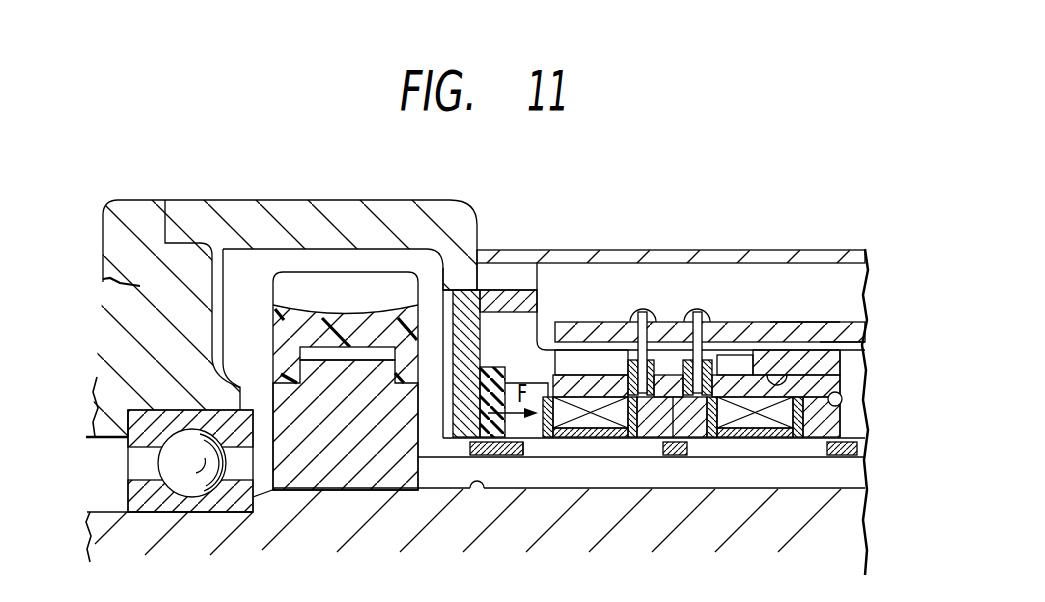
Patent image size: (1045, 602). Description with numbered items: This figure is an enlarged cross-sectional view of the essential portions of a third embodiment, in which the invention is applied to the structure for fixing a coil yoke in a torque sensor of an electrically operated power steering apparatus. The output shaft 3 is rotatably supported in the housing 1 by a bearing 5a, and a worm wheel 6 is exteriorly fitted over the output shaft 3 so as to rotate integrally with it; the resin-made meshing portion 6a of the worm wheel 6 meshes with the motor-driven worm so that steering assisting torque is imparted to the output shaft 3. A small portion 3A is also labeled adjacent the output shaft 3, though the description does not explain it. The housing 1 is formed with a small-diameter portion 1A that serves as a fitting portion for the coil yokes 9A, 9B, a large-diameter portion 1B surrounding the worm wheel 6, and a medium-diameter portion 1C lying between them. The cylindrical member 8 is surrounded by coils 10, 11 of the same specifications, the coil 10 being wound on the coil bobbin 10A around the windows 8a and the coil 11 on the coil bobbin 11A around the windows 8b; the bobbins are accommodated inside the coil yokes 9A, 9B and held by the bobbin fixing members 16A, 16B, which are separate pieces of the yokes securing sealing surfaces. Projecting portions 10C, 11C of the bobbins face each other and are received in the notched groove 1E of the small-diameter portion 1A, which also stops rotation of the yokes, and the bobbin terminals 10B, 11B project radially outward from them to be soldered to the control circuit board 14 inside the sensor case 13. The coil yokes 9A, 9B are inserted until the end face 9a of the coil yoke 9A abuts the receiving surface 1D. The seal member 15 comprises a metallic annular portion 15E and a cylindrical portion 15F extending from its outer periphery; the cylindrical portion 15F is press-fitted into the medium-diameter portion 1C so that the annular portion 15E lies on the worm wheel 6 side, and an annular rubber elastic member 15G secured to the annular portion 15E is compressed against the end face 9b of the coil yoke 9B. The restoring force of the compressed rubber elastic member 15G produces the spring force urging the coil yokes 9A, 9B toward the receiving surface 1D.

The housing 1 is at (190, 203).
The small-diameter portion 1A is at (862, 330).
The large-diameter portion 1B is at (345, 250).
The medium-diameter portion 1C is at (504, 295).
The receiving surface 1D is at (846, 399).
The notched groove 1E is at (784, 323).
The output shaft 3 is at (88, 556).
The base projection 3A is at (477, 492).
The bearing 5a is at (170, 462).
The worm wheel 6 is at (305, 257).
The meshing portion 6a is at (372, 280).
The cylindrical member 8 is at (862, 448).
The windows 8a is at (760, 452).
The windows 8b is at (578, 452).
The end face 9a is at (842, 372).
The coil yoke 9A is at (820, 444).
The end face 9b is at (468, 442).
The coil yoke 9B is at (528, 440).
The coil 10 is at (773, 428).
The coil bobbin 10A is at (727, 447).
The bobbin terminal 10B is at (693, 313).
The projecting portion 10C is at (743, 350).
The coil 11 is at (590, 428).
The coil bobbin 11A is at (613, 438).
The bobbin terminal 11B is at (655, 325).
The projecting portion 11C is at (630, 364).
The sensor case 13 is at (821, 251).
The control circuit board 14 is at (858, 313).
The seal member 15 is at (440, 396).
The annular portion 15E is at (460, 340).
The cylindrical portion 15F is at (474, 266).
The rubber elastic member 15G is at (498, 368).
The bobbin fixing member 16A is at (693, 432).
The bobbin fixing member 16B is at (655, 428).